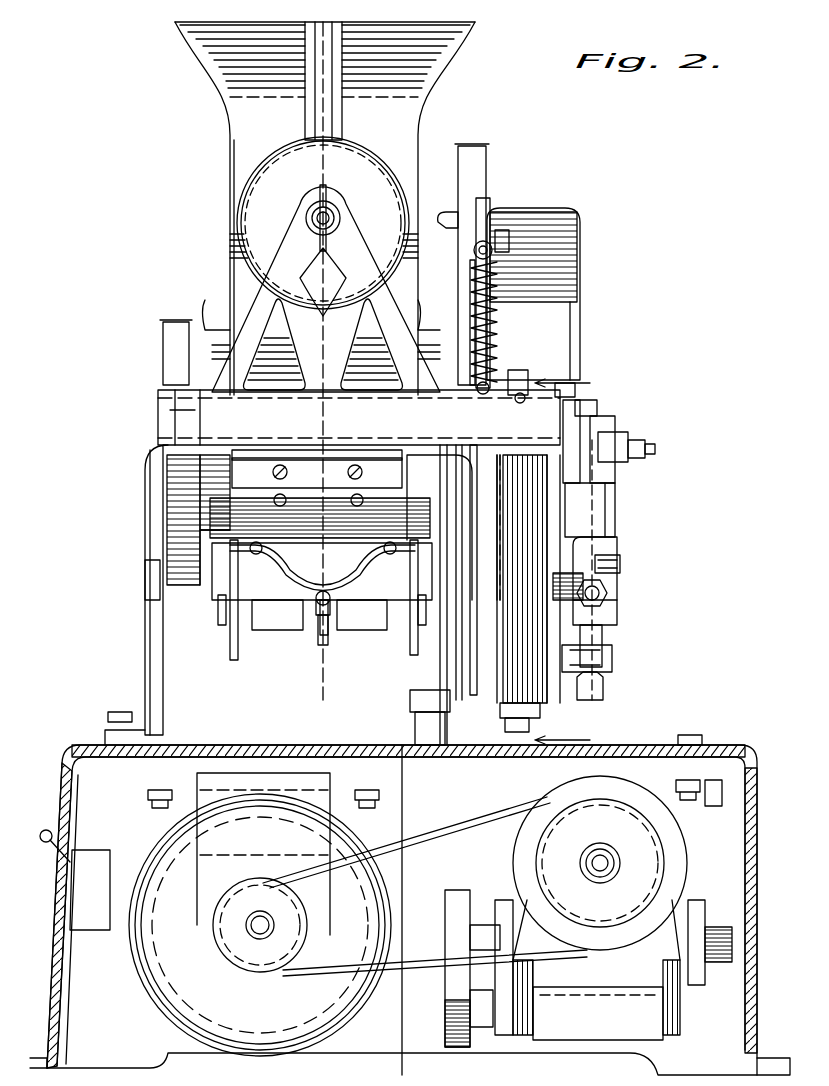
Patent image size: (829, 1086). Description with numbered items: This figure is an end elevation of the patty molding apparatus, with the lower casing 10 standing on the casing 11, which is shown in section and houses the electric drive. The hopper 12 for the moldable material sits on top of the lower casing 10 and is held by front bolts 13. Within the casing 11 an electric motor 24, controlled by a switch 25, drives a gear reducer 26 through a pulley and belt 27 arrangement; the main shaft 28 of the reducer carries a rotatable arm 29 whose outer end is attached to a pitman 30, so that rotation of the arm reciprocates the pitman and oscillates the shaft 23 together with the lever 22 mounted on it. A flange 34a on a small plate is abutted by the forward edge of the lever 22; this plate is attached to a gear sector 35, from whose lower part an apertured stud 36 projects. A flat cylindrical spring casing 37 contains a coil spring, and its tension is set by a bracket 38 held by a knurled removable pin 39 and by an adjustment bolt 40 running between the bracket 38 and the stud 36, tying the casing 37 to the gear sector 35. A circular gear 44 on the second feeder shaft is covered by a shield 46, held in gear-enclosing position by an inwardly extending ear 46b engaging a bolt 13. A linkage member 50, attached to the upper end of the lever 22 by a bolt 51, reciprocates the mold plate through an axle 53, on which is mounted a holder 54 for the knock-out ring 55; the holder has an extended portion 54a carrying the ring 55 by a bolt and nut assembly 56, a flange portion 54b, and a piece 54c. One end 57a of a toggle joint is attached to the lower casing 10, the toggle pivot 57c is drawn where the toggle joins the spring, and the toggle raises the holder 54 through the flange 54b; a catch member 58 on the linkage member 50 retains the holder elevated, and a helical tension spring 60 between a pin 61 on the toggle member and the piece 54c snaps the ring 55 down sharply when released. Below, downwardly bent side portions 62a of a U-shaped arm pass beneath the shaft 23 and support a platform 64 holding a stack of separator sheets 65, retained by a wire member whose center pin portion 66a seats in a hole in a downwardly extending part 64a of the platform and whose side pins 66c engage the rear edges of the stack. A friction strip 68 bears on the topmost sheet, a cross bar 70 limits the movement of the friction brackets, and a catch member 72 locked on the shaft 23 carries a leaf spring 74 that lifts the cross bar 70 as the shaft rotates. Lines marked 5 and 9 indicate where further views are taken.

The section line 5- 5 is at (290, 40).
The section line 9- 9 is at (562, 562).
The lower casing 10 is at (160, 483).
The casing 11 is at (760, 850).
The hopper 12 is at (416, 80).
The front bolts 13 is at (168, 340).
The lever 22 is at (628, 440).
The shaft 23 is at (170, 555).
The electric motor 24 is at (165, 985).
The switch 25 is at (92, 866).
The gear reducer 26 is at (688, 875).
The pulley and belt arrangement 27 is at (462, 830).
The main shaft 28 is at (716, 930).
The rotatable arm 29 is at (462, 900).
The pitman 30 is at (440, 735).
The outwardly projecting flange 34a is at (600, 510).
The gear sector 35 is at (545, 696).
The apertured stud 36 is at (612, 655).
The spring casing 37 is at (530, 722).
The bracket 38 is at (612, 605).
The removable pin 39 is at (620, 573).
The adjustment bolt 40 is at (602, 636).
The second circular gear 44 is at (525, 378).
The shield 46 is at (580, 222).
The inwardly extending ear 46b is at (438, 210).
The linkage member 50 is at (605, 423).
The bolt 51 is at (655, 449).
The axle 53 is at (597, 404).
The holder 54 is at (240, 345).
The extended portion 54a is at (290, 225).
The flange portion 54b is at (570, 390).
The piece 54c is at (490, 382).
The knock-out ring 55 is at (280, 170).
The bolt and nut assembly 56 is at (330, 213).
The toggle joint end 57a is at (498, 320).
The pivot pin 57c is at (483, 242).
The catch member 58 is at (523, 395).
The helical tension spring 60 is at (497, 290).
The pin 61 is at (490, 248).
The downwardly bent side portions 62a is at (230, 658).
The platform 64 is at (212, 580).
The downwardly extending part 64a is at (335, 570).
The stack of separator sheets 65 is at (240, 520).
The center pin portion 66a is at (320, 640).
The downwardly extending pins 66c is at (218, 615).
The friction strip 68 is at (288, 520).
The cross bar 70 is at (345, 458).
The catch member 72 is at (352, 625).
The leaf spring 74 is at (310, 612).